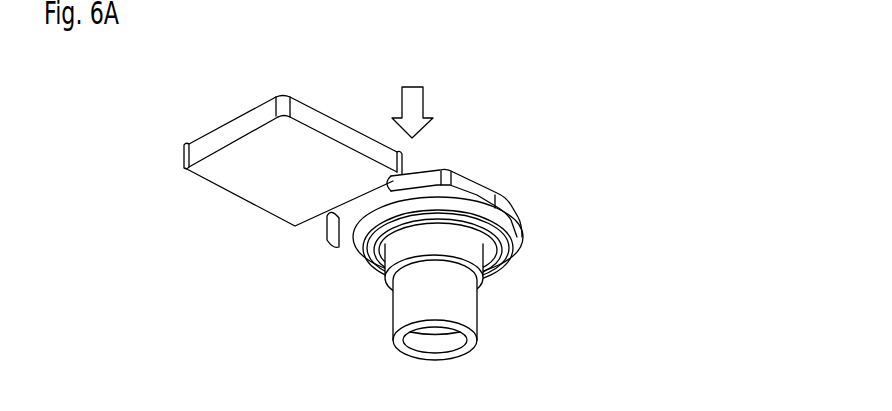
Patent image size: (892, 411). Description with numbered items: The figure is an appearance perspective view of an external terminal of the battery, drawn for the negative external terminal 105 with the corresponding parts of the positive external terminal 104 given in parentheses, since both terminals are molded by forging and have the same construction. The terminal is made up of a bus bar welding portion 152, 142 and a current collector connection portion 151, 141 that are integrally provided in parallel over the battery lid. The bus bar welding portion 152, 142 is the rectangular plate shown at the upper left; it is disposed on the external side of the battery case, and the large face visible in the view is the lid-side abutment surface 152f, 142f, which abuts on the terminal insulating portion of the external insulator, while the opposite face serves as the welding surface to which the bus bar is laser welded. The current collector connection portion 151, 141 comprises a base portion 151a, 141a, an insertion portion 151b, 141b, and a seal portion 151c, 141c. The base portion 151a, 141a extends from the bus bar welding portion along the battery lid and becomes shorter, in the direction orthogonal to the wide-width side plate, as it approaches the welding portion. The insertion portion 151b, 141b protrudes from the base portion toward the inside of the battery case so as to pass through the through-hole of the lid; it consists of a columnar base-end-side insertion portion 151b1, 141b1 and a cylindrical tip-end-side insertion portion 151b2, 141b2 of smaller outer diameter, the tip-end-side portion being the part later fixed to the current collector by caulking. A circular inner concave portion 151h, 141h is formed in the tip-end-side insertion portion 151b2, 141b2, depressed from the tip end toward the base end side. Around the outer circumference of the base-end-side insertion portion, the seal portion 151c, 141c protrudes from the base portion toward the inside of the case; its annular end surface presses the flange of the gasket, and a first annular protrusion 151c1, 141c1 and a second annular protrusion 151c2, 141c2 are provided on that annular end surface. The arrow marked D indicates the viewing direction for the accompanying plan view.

The negative external terminal 105 is at (432, 228).
The positive external terminal 104 is at (160, 120).
The bus bar welding portion 152 is at (210, 179).
The bus bar welding portion 142 is at (166, 167).
The lid-side abutment surface 152f is at (257, 189).
The lid-side abutment surface 142f is at (275, 178).
The current collector connection portion 151 is at (482, 254).
The current collector connection portion 141 is at (358, 326).
The base portion 151a is at (496, 167).
The base portion 141a is at (480, 190).
The seal portion 151c is at (388, 235).
The seal portion 141c is at (497, 221).
The first annular protrusion 151c1 is at (316, 251).
The first annular protrusion 141c1 is at (358, 249).
The second annular protrusion 151c2 is at (325, 271).
The second annular protrusion 141c2 is at (380, 275).
The negative insertion portion 151b is at (615, 327).
The insertion portion 141b is at (688, 287).
The base-end-side insertion portion 151b1 is at (533, 281).
The base-end-side insertion portion 141b1 is at (479, 257).
The tip-end-side insertion portion 151b2 is at (537, 335).
The tip-end-side insertion portion 141b2 is at (464, 307).
The inner concave portion 151h is at (486, 369).
The inner concave portion 141h is at (443, 352).